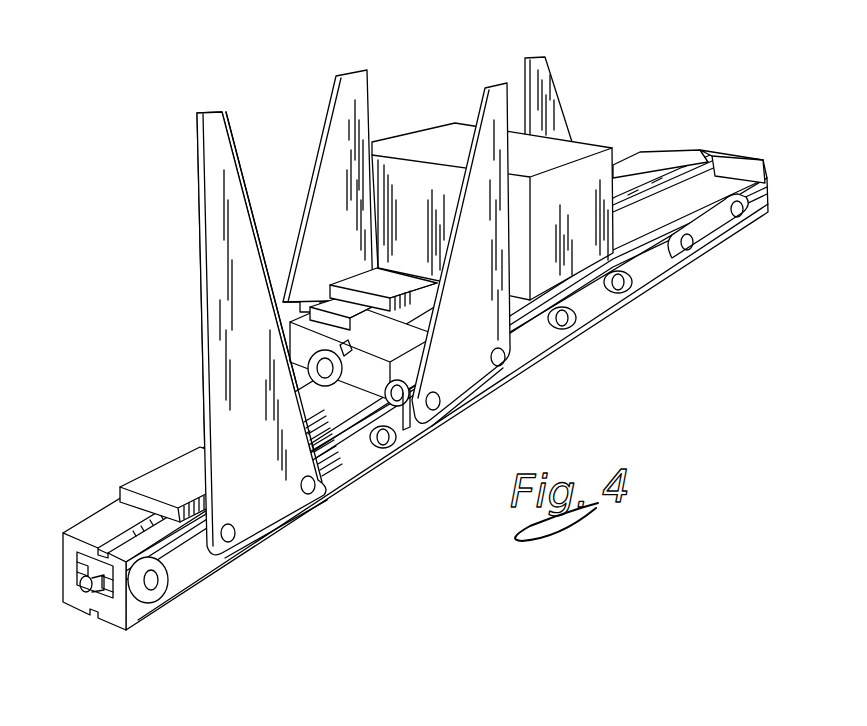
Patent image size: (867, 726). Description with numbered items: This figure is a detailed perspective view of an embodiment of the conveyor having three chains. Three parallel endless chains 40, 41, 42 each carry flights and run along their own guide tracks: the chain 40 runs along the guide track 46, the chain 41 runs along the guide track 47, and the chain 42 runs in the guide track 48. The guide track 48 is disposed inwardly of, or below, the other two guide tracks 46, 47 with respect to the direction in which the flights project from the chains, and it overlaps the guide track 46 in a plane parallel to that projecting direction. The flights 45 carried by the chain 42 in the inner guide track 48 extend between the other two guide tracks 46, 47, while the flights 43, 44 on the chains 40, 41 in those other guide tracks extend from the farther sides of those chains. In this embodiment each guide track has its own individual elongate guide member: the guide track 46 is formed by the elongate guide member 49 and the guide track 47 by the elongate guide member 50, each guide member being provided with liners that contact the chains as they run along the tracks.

The endless chain 40 is at (327, 372).
The endless chain 41 is at (660, 250).
The endless chain 42 is at (192, 553).
The flight 43 is at (352, 90).
The flight 44 is at (498, 102).
The flight 45 is at (545, 74).
The guide track 46 is at (350, 385).
The guide track 47 is at (415, 352).
The guide track 48 is at (75, 585).
The elongate guide member 49 is at (653, 167).
The elongate guide member 50 is at (717, 170).